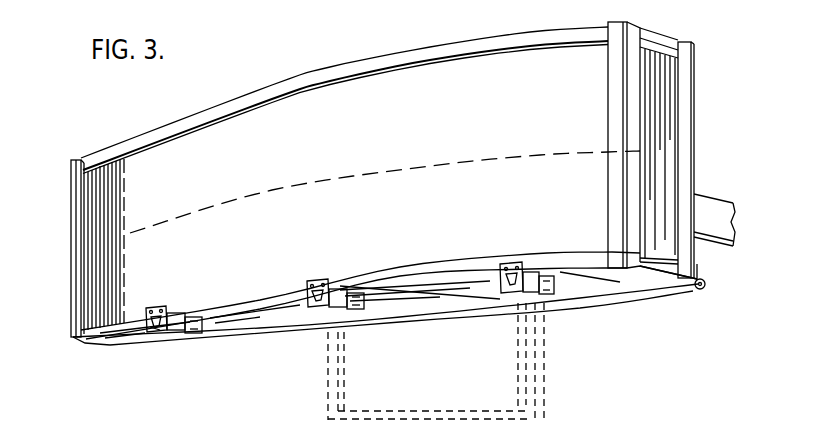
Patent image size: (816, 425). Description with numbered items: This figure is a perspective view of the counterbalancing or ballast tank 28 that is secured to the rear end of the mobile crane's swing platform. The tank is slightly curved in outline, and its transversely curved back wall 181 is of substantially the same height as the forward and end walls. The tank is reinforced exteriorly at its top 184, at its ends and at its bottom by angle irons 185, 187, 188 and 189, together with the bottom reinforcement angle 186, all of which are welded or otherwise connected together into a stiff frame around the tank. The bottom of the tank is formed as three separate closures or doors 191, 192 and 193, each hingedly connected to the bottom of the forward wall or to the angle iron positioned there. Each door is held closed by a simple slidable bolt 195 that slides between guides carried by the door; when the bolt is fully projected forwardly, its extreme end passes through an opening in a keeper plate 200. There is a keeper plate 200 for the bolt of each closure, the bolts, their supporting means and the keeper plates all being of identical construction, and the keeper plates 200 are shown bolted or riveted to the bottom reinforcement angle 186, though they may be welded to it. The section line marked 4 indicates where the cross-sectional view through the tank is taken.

The section line 4- 4 is at (130, 233).
The ballast tank 28 is at (133, 126).
The back wall 181 is at (499, 62).
The top 184 is at (355, 58).
The angle iron 185 is at (430, 48).
The angle iron 186 is at (455, 266).
The angle iron 187 is at (692, 108).
The angle iron 188 is at (612, 98).
The angle iron 189 is at (663, 45).
The door 191 is at (101, 339).
The door 192 is at (462, 298).
The door 193 is at (617, 283).
The slidable bolt 195 is at (153, 323).
The keeper plate 200 is at (150, 309).